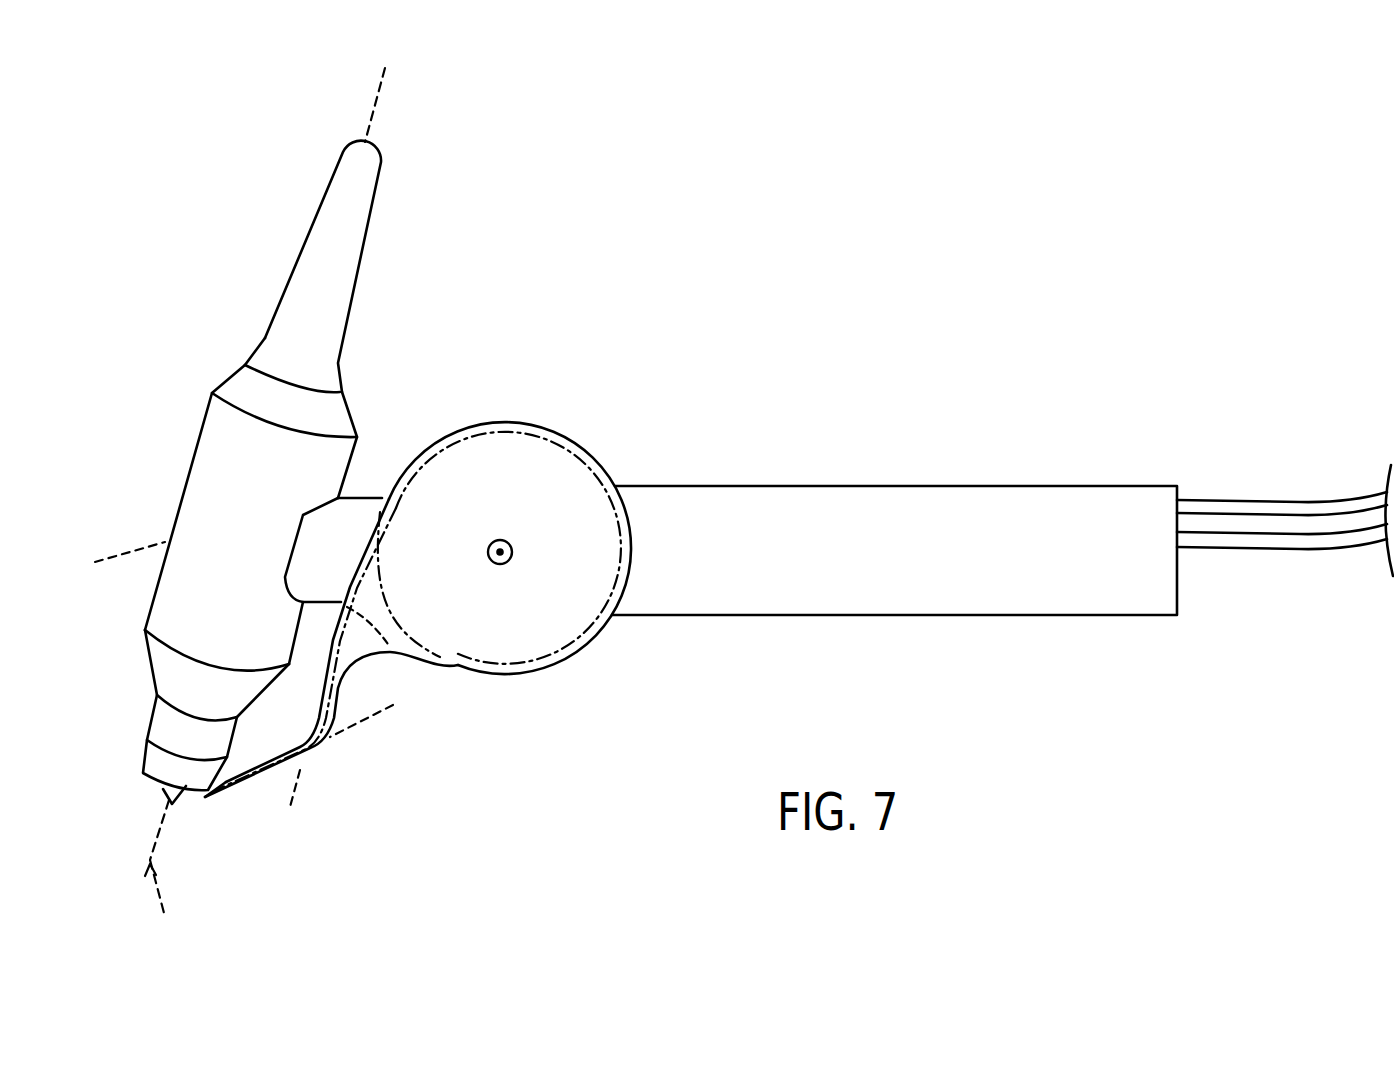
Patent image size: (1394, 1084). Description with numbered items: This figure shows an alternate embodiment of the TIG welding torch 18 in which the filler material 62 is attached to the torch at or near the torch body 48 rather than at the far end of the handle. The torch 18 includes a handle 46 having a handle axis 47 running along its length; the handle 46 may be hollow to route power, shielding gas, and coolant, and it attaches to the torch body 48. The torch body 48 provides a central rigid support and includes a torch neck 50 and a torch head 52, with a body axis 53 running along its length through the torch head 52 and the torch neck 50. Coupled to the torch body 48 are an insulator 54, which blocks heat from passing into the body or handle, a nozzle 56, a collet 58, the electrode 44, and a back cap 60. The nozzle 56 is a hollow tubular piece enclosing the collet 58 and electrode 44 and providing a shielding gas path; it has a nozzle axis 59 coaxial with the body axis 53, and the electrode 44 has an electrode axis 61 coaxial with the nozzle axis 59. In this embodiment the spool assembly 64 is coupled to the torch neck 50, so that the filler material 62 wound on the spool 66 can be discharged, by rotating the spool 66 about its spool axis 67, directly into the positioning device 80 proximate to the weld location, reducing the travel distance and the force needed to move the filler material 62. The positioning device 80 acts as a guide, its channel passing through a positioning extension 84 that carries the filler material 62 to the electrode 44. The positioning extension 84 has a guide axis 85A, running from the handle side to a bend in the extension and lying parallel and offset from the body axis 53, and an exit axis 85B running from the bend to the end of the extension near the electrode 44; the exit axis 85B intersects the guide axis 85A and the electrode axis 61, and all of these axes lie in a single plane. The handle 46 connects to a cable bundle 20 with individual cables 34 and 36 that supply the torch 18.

The TIG welding torch 18 is at (720, 367).
The cable bundle 20 is at (1248, 498).
The cable 34 is at (1280, 522).
The cable 36 is at (1317, 553).
The electrode 44 is at (167, 797).
The handle 46 is at (895, 486).
The handle axis 47 is at (114, 559).
The torch body 48 is at (153, 383).
The torch neck 50 is at (363, 497).
The torch head 52 is at (190, 507).
The body axis 53 is at (380, 110).
The insulator 54 is at (204, 674).
The nozzle 56 is at (153, 713).
The collet 58 is at (146, 760).
The nozzle axis 59 is at (150, 853).
The back cap 60 is at (308, 247).
The electrode axis 61 is at (163, 905).
The filler material 62 is at (217, 800).
The spool assembly 64 is at (557, 410).
The spool 66 is at (553, 678).
The spool axis 67 is at (492, 562).
The positioning device 80 is at (263, 790).
The positioning extension 84 is at (262, 763).
The guide axis 85A is at (302, 779).
The exit axis 85B is at (360, 730).